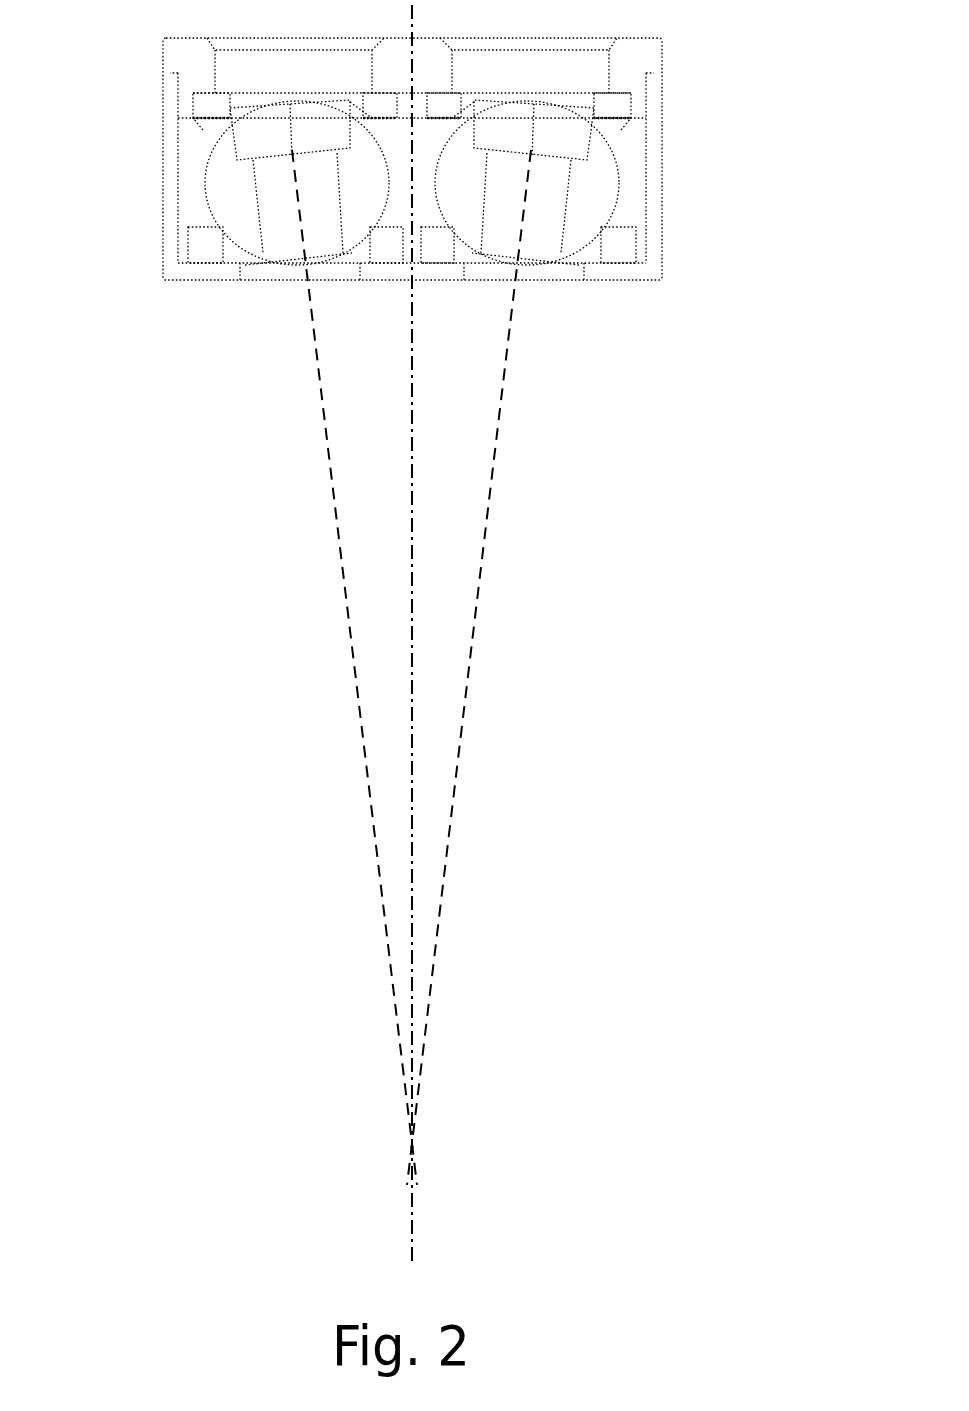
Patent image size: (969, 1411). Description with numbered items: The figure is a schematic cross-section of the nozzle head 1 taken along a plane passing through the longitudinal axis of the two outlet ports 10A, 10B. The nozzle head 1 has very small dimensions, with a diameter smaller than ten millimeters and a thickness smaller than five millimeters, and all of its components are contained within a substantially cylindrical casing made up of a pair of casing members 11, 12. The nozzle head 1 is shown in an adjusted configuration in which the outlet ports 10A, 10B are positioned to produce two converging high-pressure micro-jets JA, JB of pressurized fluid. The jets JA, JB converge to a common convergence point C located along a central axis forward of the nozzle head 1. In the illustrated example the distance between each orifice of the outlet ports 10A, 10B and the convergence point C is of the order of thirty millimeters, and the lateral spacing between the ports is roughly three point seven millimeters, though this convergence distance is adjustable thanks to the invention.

The nozzle head 1 is at (688, 158).
The outlet port 10A is at (287, 250).
The outlet port 10B is at (535, 255).
The casing member 11 is at (173, 247).
The casing member 12 is at (183, 55).
The jet JA is at (350, 622).
The jet JB is at (470, 622).
The convergence point C is at (411, 1150).